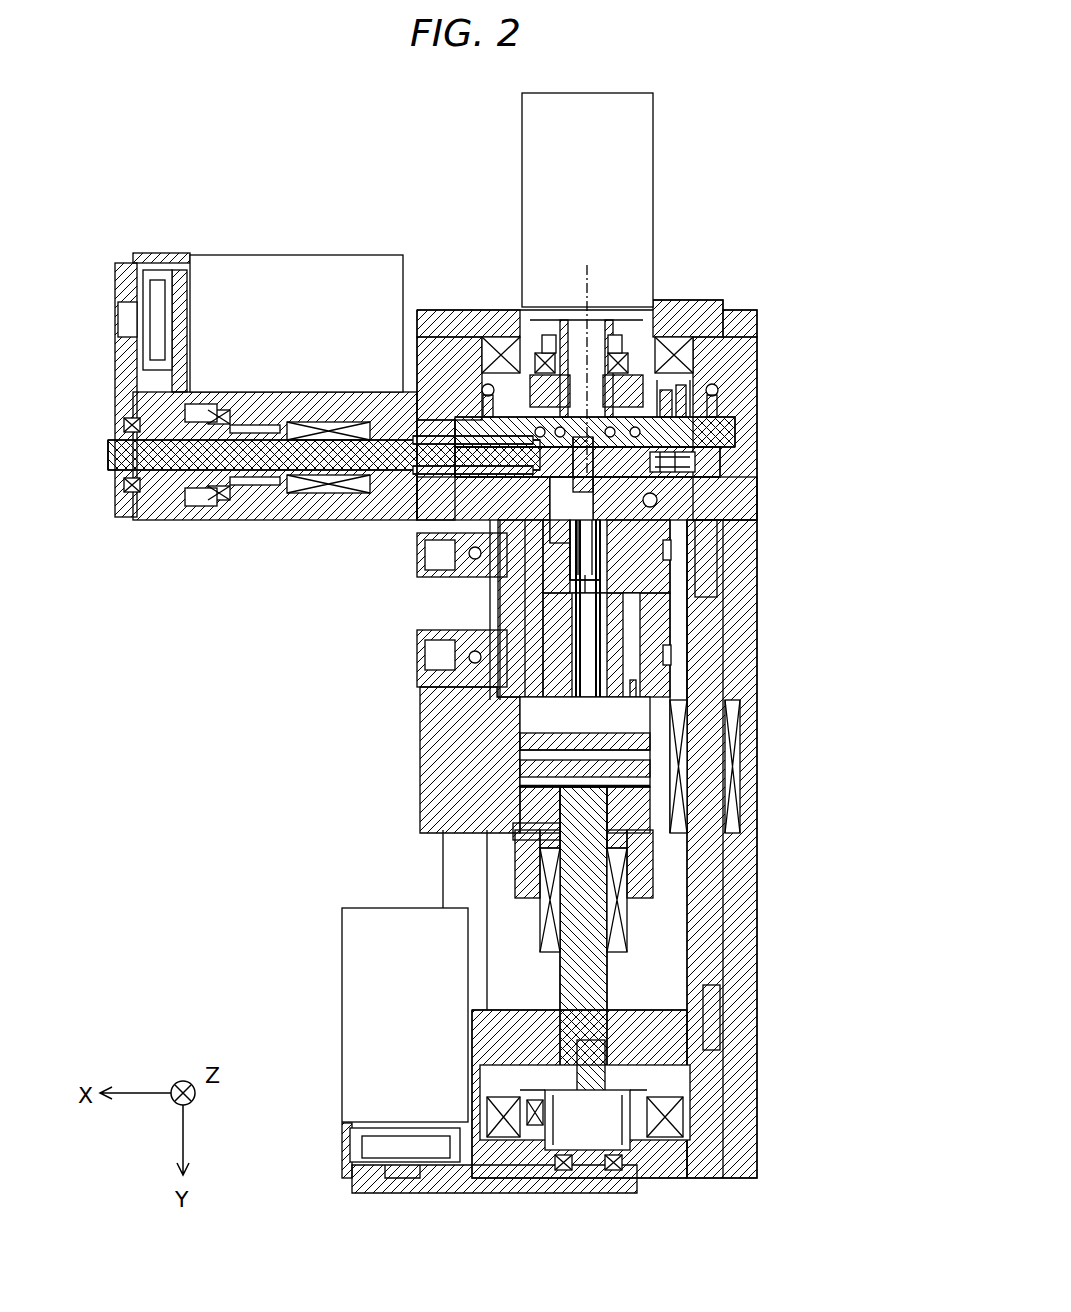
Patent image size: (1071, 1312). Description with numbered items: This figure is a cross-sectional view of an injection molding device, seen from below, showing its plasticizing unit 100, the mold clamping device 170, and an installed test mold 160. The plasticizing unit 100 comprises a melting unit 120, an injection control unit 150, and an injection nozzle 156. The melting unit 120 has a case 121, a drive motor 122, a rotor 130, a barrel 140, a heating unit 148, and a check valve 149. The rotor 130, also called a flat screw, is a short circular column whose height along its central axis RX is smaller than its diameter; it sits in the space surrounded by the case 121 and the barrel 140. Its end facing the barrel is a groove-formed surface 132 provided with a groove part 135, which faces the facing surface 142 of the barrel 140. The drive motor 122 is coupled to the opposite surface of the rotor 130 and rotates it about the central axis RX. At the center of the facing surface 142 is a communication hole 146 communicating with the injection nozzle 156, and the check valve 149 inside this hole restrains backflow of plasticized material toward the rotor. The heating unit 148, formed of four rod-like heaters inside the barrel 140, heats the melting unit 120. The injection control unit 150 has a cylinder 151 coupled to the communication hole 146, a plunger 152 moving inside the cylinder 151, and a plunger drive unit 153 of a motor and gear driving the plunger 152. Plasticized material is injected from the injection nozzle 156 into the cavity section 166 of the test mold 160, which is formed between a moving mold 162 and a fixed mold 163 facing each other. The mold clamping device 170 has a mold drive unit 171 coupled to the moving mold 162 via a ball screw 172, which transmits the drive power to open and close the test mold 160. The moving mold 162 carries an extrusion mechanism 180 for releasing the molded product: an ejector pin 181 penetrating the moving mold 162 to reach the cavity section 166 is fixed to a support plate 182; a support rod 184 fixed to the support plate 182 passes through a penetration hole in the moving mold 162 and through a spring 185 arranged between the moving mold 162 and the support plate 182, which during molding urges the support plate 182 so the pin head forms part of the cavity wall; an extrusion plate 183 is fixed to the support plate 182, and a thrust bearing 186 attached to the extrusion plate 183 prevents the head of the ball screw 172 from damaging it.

The plasticizing unit 100 is at (428, 205).
The melting unit 120 is at (540, 643).
The case 121 is at (722, 372).
The drive motor 122 is at (655, 220).
The rotor 130 is at (490, 335).
The groove-formed surface 132 is at (727, 436).
The groove part 135 is at (712, 348).
The barrel 140 is at (735, 452).
The facing surface 142 is at (700, 397).
The communication hole 146 is at (735, 470).
The heating unit 148 is at (445, 335).
The check valve 149 is at (620, 332).
The injection control unit 150 is at (324, 413).
The cylinder 151 is at (520, 474).
The plunger 152 is at (262, 470).
The plunger drive unit 153 is at (288, 255).
The injection nozzle 156 is at (620, 546).
The test mold 160 is at (403, 610).
The moving mold 162 is at (450, 627).
The fixed mold 163 is at (450, 590).
The cavity section 166 is at (600, 620).
The mold clamping device 170 is at (536, 990).
The mold drive unit 171 is at (342, 1012).
The ball screw 172 is at (600, 975).
The extrusion mechanism 180 is at (430, 763).
The ejector pin 181 is at (680, 650).
The support plate 182 is at (465, 742).
The extrusion plate 183 is at (520, 772).
The support rod 184 is at (660, 682).
The spring 185 is at (642, 706).
The thrust bearing 186 is at (520, 788).
The central axis RX is at (598, 267).